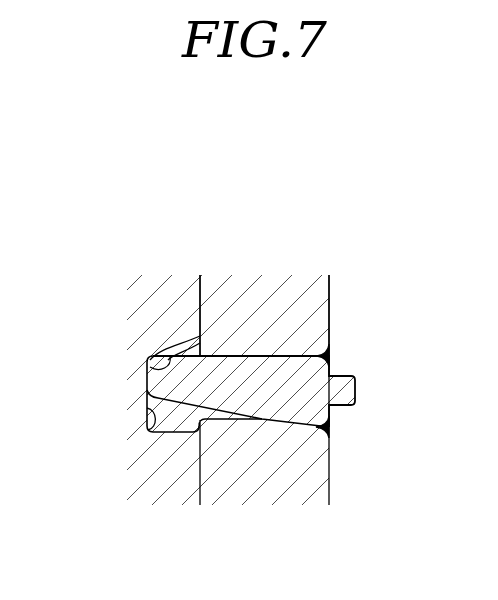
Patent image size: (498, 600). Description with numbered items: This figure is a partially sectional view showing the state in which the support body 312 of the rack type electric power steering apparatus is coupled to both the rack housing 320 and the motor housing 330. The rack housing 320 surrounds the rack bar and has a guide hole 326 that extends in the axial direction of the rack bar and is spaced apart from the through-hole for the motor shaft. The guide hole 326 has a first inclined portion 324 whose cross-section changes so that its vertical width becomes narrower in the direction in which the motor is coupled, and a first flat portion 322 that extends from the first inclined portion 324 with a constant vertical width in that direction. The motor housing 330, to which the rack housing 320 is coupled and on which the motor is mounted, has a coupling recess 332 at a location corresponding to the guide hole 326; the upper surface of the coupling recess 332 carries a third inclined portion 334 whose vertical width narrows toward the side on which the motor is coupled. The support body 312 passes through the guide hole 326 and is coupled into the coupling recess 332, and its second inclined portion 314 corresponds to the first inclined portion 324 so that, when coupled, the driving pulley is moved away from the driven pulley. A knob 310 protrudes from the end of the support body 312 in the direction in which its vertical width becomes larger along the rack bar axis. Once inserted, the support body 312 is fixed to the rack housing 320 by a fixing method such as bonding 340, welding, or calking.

The knob 310 is at (352, 392).
The support body 312 is at (278, 370).
The second inclined portion 314 is at (182, 402).
The rack housing 320 is at (225, 292).
The first flat portion 322 is at (218, 420).
The first inclined portion 324 is at (285, 420).
The guide hole 326 is at (252, 356).
The motor housing 330 is at (163, 292).
The coupling recess 332 is at (150, 431).
The third inclined portion 334 is at (150, 368).
The bonding 340 is at (332, 356).